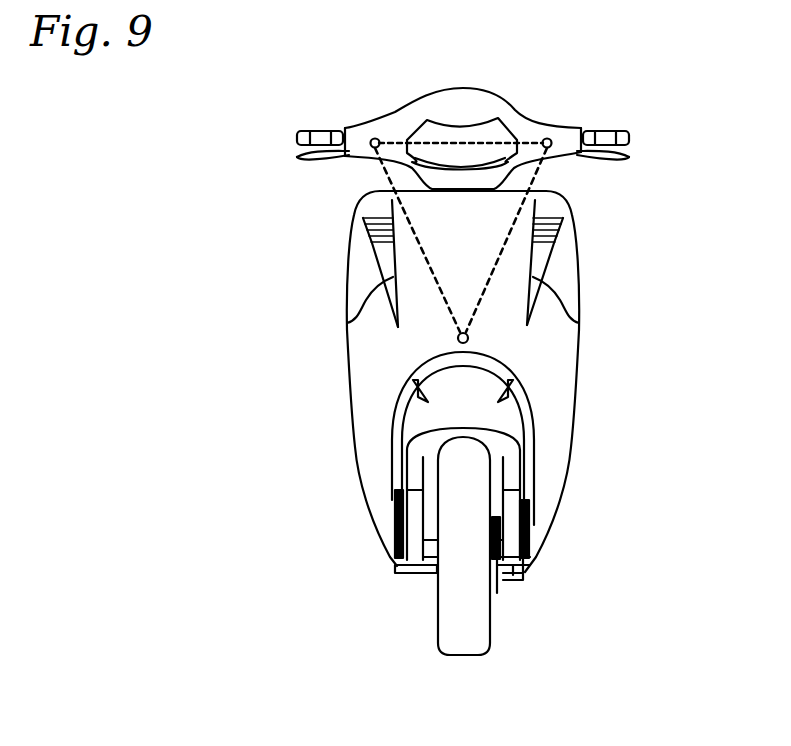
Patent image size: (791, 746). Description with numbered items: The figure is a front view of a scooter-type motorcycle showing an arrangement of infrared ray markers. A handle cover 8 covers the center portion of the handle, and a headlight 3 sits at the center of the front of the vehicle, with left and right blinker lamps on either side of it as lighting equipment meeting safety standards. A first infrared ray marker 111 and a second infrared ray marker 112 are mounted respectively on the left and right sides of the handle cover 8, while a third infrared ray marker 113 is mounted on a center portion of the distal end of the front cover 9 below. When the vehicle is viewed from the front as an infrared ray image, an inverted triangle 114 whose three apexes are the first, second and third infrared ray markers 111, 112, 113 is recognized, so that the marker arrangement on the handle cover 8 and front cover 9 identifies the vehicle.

The headlight 3 is at (538, 157).
The handle cover 8 is at (517, 95).
The front cover 9 is at (579, 268).
The first infrared ray marker 111 is at (551, 142).
The second infrared ray marker 112 is at (371, 139).
The third infrared ray marker 113 is at (468, 339).
The inverted triangle 114 is at (440, 293).